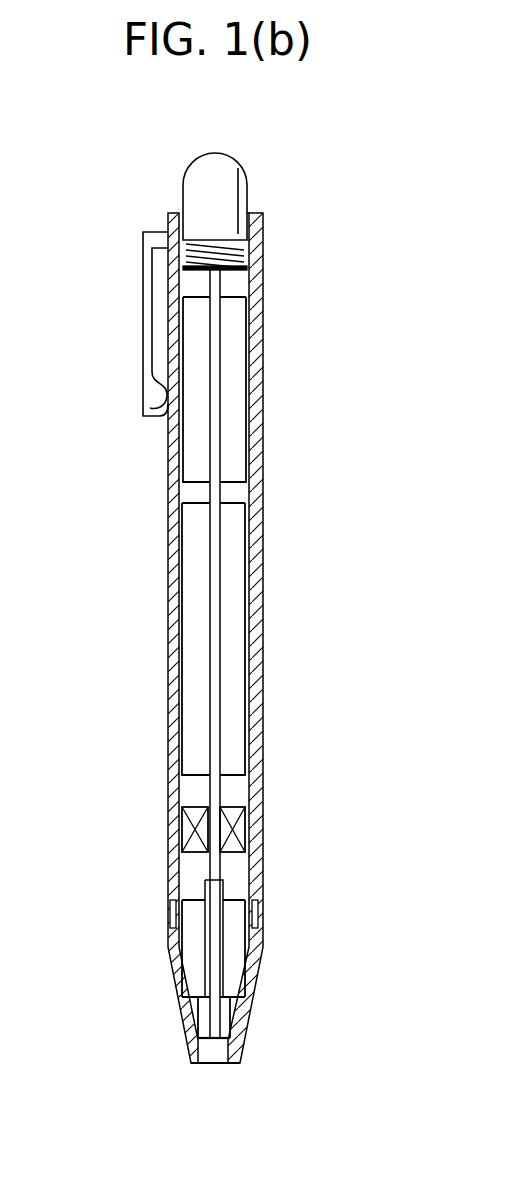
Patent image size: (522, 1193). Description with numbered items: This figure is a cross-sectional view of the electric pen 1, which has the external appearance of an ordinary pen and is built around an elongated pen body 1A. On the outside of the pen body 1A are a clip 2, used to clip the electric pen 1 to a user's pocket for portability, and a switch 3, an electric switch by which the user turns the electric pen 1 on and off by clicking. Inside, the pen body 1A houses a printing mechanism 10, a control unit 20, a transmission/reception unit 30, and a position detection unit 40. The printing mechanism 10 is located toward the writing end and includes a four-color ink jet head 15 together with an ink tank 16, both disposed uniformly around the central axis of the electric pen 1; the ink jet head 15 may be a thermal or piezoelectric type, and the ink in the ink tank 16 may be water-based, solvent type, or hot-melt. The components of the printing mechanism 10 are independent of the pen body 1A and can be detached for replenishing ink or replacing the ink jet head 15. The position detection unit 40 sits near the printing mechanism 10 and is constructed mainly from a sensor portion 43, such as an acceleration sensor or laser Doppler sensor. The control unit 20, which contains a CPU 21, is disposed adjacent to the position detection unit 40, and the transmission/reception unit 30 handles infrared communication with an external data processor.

The electric pen 1 is at (270, 638).
The pen body 1A is at (262, 587).
The clip 2 is at (152, 388).
The switch 3 is at (231, 182).
The CPU 21 is at (186, 258).
The transmission/reception unit 30 is at (193, 462).
The control unit 20 is at (193, 645).
The sensor portion 43 is at (185, 828).
The position detection unit 40 is at (240, 856).
The printing mechanism 10 is at (129, 970).
The ink tank 16 is at (190, 940).
The ink jet head 15 is at (205, 1020).